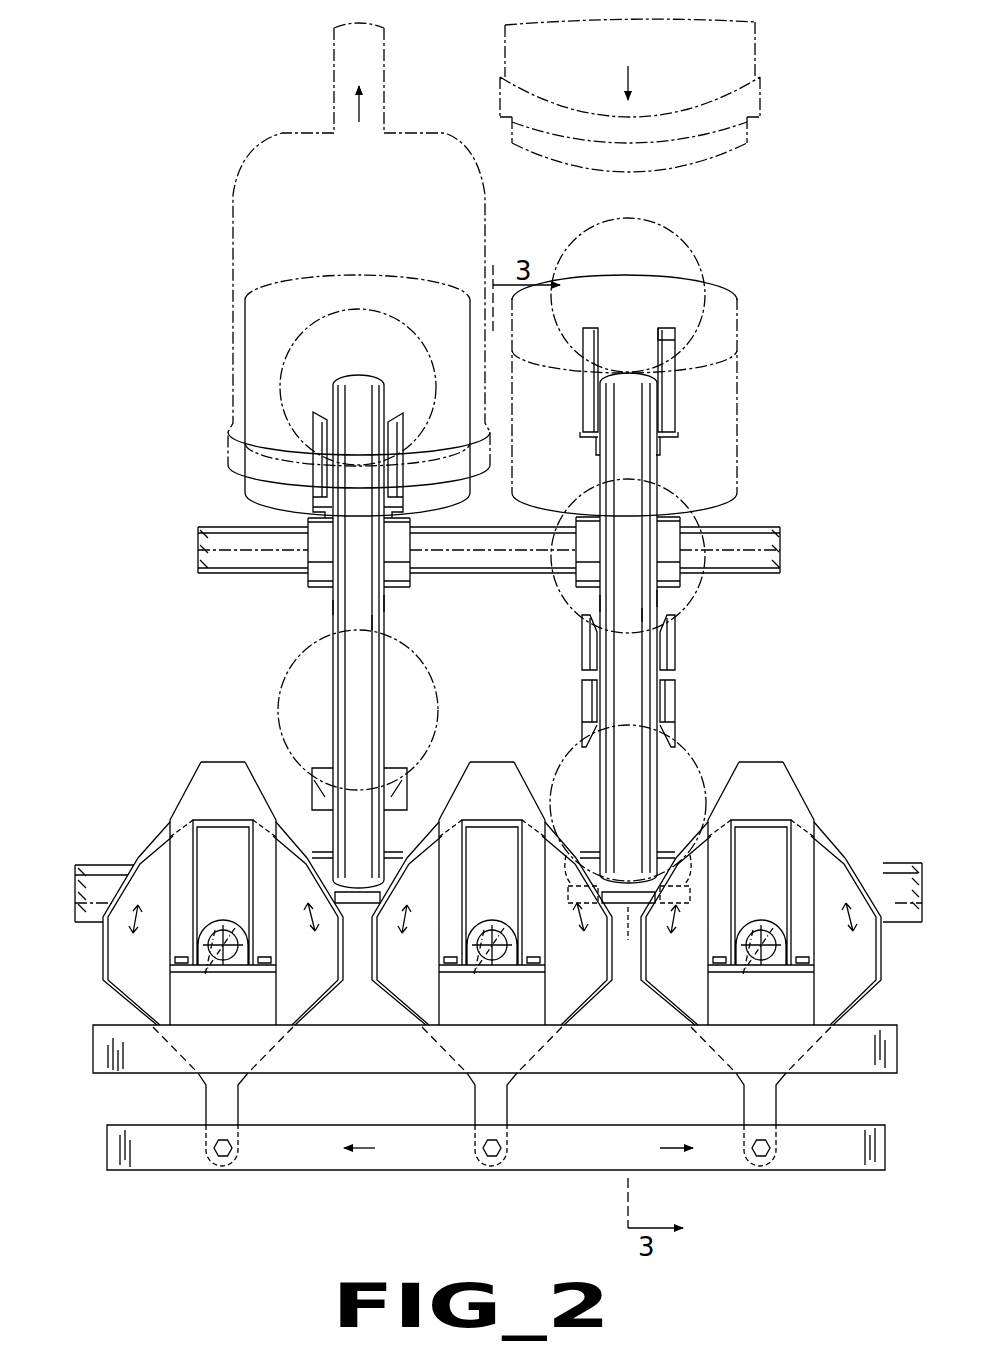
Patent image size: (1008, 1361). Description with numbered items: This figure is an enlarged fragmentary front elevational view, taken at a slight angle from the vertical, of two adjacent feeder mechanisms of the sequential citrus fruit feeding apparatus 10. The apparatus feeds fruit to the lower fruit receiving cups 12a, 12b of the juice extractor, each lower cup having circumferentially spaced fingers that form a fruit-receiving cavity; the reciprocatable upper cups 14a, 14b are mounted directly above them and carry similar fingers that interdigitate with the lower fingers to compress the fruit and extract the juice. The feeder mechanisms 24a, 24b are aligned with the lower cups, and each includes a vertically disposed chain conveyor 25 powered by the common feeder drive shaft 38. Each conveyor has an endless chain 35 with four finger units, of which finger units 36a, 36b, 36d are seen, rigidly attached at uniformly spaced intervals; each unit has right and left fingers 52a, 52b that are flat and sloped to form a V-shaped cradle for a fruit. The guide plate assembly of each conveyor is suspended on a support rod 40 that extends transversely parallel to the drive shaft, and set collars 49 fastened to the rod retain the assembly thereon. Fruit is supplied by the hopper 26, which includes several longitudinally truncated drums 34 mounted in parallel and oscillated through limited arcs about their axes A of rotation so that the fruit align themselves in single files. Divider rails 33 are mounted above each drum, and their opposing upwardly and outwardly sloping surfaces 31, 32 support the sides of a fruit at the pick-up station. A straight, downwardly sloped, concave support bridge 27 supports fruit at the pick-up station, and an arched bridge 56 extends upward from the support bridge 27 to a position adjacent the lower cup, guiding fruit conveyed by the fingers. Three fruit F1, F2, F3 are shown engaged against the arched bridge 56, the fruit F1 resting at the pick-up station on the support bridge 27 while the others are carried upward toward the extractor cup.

The sequential citrus fruit feeding apparatus 10 is at (243, 687).
The lower fruit receiving cup 12a is at (245, 380).
The lower fruit receiving cup 12b is at (740, 350).
The upper cup 14a is at (233, 250).
The upper cup 14b is at (762, 90).
The fruit feeder mechanism 24a is at (322, 629).
The fruit feeder mechanism 24b is at (694, 725).
The chain conveyor 25 is at (402, 603).
The hopper 26 is at (115, 1007).
The support bridge 27 is at (337, 892).
The sloping surface 31 is at (823, 786).
The sloping surface 32 is at (740, 772).
The divider rail 33 is at (778, 806).
The longitudinally truncated drum 34 is at (866, 976).
The endless chain 35 is at (333, 607).
The finger unit 36a is at (668, 320).
The finger unit 36b is at (690, 705).
The finger unit 36d is at (690, 640).
The feeder drive shaft 38 is at (93, 873).
The support rod 40 is at (198, 548).
The set collar 49 is at (412, 523).
The right finger 52a is at (665, 402).
The left finger 52b is at (583, 395).
The arched bridge 56 is at (365, 623).
The axis of rotation A is at (485, 968).
The fruit F1 is at (572, 748).
The fruit F2 is at (712, 520).
The fruit F3 is at (693, 226).